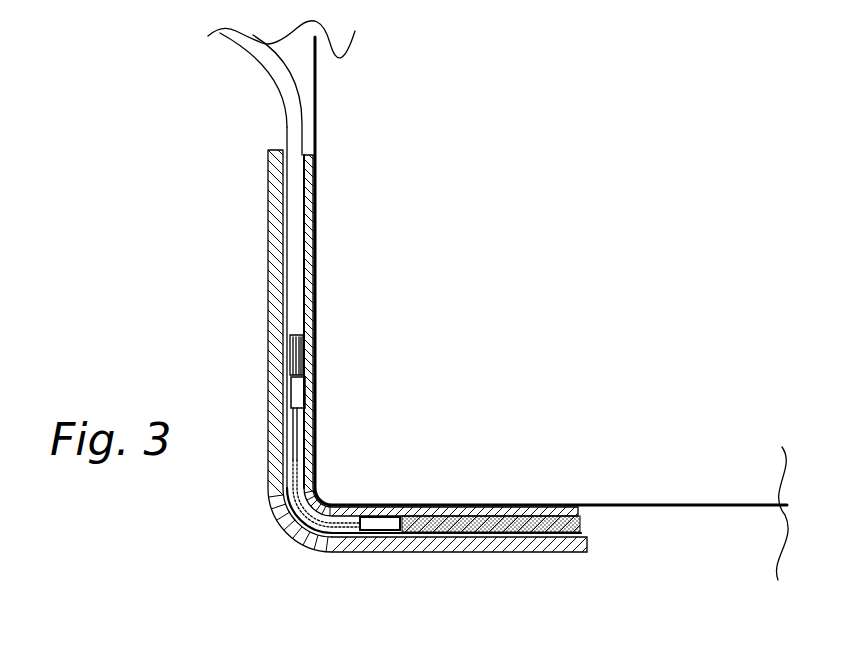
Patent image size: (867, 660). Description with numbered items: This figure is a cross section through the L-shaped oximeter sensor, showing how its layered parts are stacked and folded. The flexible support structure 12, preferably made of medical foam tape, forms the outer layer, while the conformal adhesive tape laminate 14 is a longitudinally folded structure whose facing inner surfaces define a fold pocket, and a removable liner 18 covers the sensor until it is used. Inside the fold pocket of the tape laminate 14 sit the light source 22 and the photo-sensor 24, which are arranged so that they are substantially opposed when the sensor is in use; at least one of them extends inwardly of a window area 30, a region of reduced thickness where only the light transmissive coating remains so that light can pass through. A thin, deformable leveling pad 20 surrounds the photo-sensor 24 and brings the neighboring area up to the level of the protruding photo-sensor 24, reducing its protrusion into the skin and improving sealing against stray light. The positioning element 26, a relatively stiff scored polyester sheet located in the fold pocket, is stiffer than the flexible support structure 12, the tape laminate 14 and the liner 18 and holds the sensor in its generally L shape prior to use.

The flexible support structure 12 is at (497, 545).
The conformal adhesive tape laminate 14 is at (510, 502).
The removable liner 18 is at (698, 502).
The leveling pad 20 is at (557, 502).
The light source 22 is at (315, 382).
The photo-sensor 24 is at (428, 502).
The positioning element 26 is at (303, 542).
The window area 30 is at (300, 386).